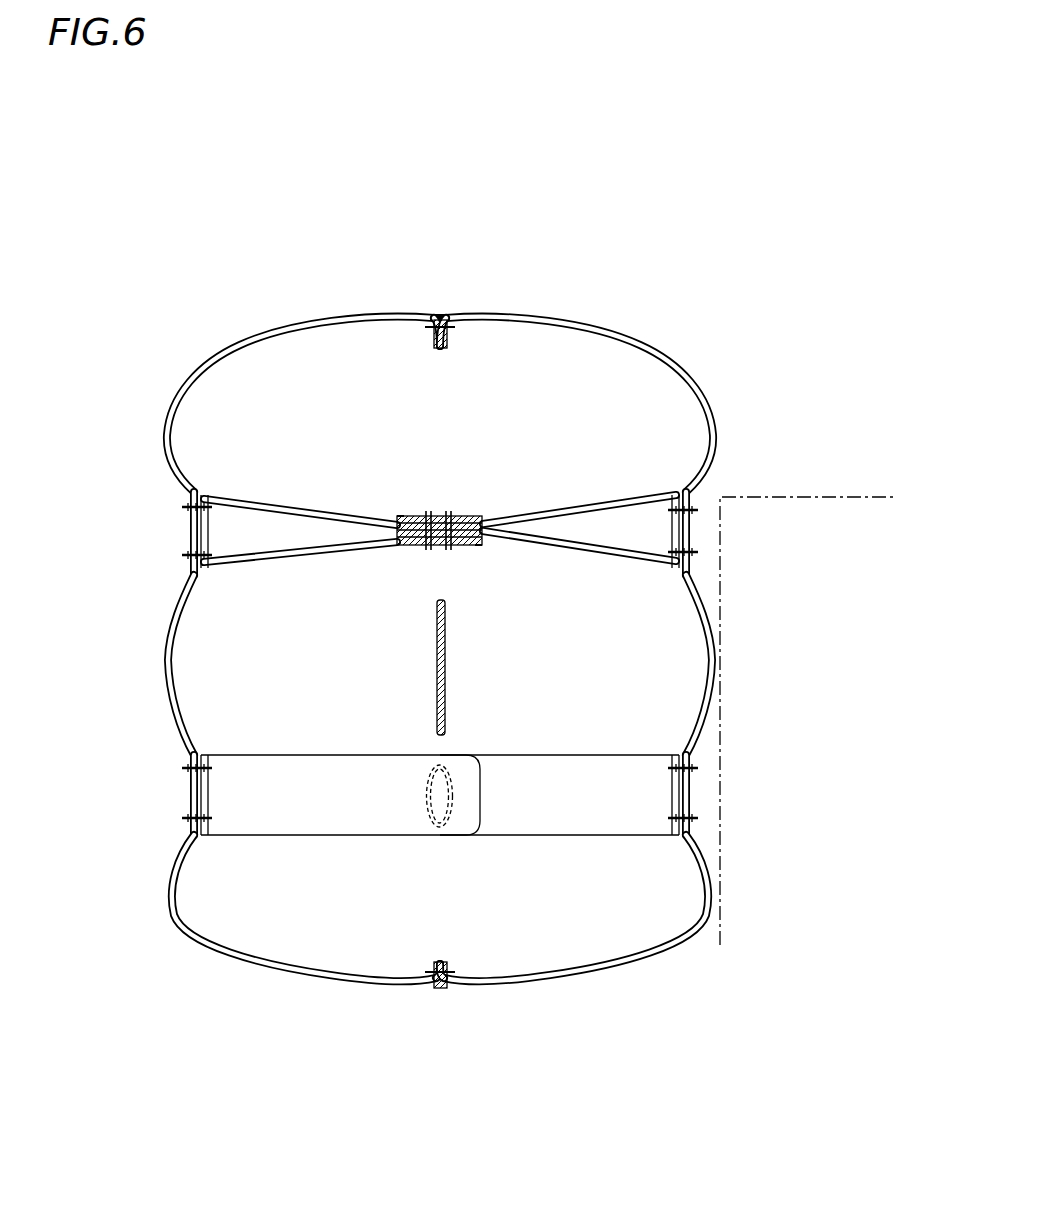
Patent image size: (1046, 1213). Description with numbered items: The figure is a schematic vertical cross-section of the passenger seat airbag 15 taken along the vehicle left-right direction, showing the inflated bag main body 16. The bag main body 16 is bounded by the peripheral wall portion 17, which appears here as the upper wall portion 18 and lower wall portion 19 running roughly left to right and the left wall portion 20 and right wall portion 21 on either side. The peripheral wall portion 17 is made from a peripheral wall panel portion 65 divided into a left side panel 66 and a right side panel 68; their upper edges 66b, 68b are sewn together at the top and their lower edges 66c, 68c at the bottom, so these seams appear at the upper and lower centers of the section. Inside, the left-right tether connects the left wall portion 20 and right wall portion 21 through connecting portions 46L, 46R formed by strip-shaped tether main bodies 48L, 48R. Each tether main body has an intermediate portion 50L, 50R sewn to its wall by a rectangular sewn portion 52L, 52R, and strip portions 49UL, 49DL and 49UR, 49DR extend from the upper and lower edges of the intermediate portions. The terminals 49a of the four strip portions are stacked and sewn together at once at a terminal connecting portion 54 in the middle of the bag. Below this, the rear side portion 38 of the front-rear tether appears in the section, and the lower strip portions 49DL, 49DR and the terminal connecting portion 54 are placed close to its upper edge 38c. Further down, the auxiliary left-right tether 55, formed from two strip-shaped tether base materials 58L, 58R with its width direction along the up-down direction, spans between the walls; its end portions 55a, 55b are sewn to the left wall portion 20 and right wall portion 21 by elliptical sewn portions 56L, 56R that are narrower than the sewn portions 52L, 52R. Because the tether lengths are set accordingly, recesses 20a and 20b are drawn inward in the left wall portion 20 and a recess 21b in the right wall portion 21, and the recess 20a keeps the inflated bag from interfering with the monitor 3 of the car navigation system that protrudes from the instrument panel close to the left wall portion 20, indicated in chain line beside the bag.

The monitor 3 is at (812, 497).
The passenger seat airbag 15 is at (678, 200).
The bag main body 16 is at (268, 331).
The peripheral wall portion 17 is at (612, 325).
The upper wall portion 18 is at (528, 320).
The lower wall portion 19 is at (520, 985).
The left wall portion 20 is at (714, 667).
The recess 20a is at (186, 505).
The recess 20b is at (699, 818).
The right wall portion 21 is at (167, 663).
The recess 21b is at (181, 818).
The rear side portion 38 is at (453, 690).
The upper edge 38c is at (438, 600).
The connecting portion 46R is at (204, 582).
The connecting portion 46L is at (676, 582).
The tether main body 48R is at (258, 492).
The tether main body 48L is at (617, 492).
The strip portion 49UR is at (325, 518).
The strip portion 49UL is at (547, 514).
The strip portion 49DR is at (298, 562).
The strip portion 49DL is at (580, 562).
The terminal 49a is at (409, 513).
The intermediate portion 50R is at (209, 532).
The intermediate portion 50L is at (671, 532).
The sewn portion 52R is at (181, 553).
The sewn portion 52L is at (699, 552).
The terminal connecting portion 54 is at (468, 512).
The auxiliary left-right tether 55 is at (516, 845).
The end portion 55a is at (660, 822).
The end portion 55b is at (222, 838).
The sewn portion 56R is at (181, 768).
The sewn portion 56L is at (699, 768).
The tether base material 58R is at (298, 840).
The tether base material 58L is at (575, 830).
The peripheral wall panel portion 65 is at (495, 190).
The left side panel 66 is at (492, 308).
The upper edge 66b is at (448, 347).
The lower edge 66c is at (447, 968).
The right side panel 68 is at (387, 308).
The upper edge 68b is at (432, 347).
The lower edge 68c is at (433, 968).